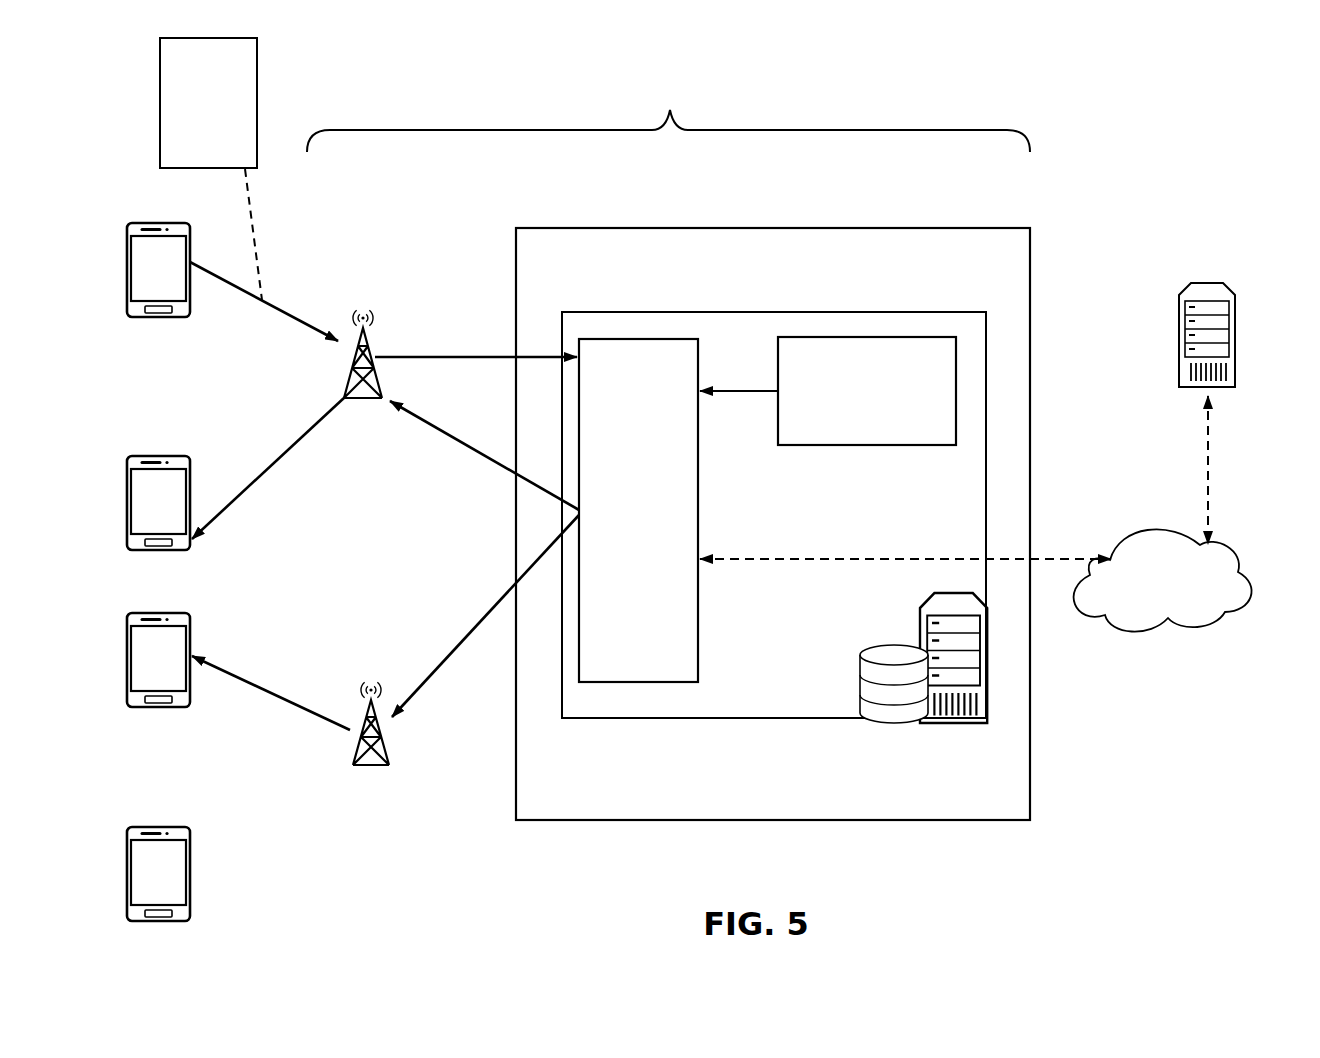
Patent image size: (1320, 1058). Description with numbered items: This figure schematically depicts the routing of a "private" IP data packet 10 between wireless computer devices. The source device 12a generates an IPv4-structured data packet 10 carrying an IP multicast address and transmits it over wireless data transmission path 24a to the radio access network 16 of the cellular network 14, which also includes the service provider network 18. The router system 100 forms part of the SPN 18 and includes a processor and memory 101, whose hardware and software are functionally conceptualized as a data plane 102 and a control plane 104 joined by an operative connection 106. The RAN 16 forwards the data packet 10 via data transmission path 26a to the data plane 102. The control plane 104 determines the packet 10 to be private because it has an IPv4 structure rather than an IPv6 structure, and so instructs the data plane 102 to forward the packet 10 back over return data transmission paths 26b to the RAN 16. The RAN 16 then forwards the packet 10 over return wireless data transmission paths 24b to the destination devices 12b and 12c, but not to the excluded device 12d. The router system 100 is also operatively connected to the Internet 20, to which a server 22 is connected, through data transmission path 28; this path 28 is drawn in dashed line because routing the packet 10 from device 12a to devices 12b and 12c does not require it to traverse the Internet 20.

The IP data packet 10 is at (257, 88).
The source device 12a is at (190, 254).
The destination device 12b is at (190, 488).
The destination device 12c is at (190, 650).
The excluded device 12d is at (190, 862).
The cellular network 14 is at (668, 115).
The radio access network 16 is at (383, 398).
The service provider network 18 is at (832, 228).
The Internet 20 is at (1243, 565).
The server 22 is at (1238, 347).
The wireless data transmission path 24a is at (278, 307).
The return wireless data transmission paths 24b is at (283, 437).
The data transmission path 26a is at (462, 355).
The return data transmission paths 26b is at (485, 455).
The data transmission path 28 is at (1043, 558).
The router system 100 is at (825, 312).
The processor and memory 101 is at (905, 723).
The data plane 102 is at (698, 636).
The control plane 104 is at (933, 445).
The operative connection 106 is at (755, 391).